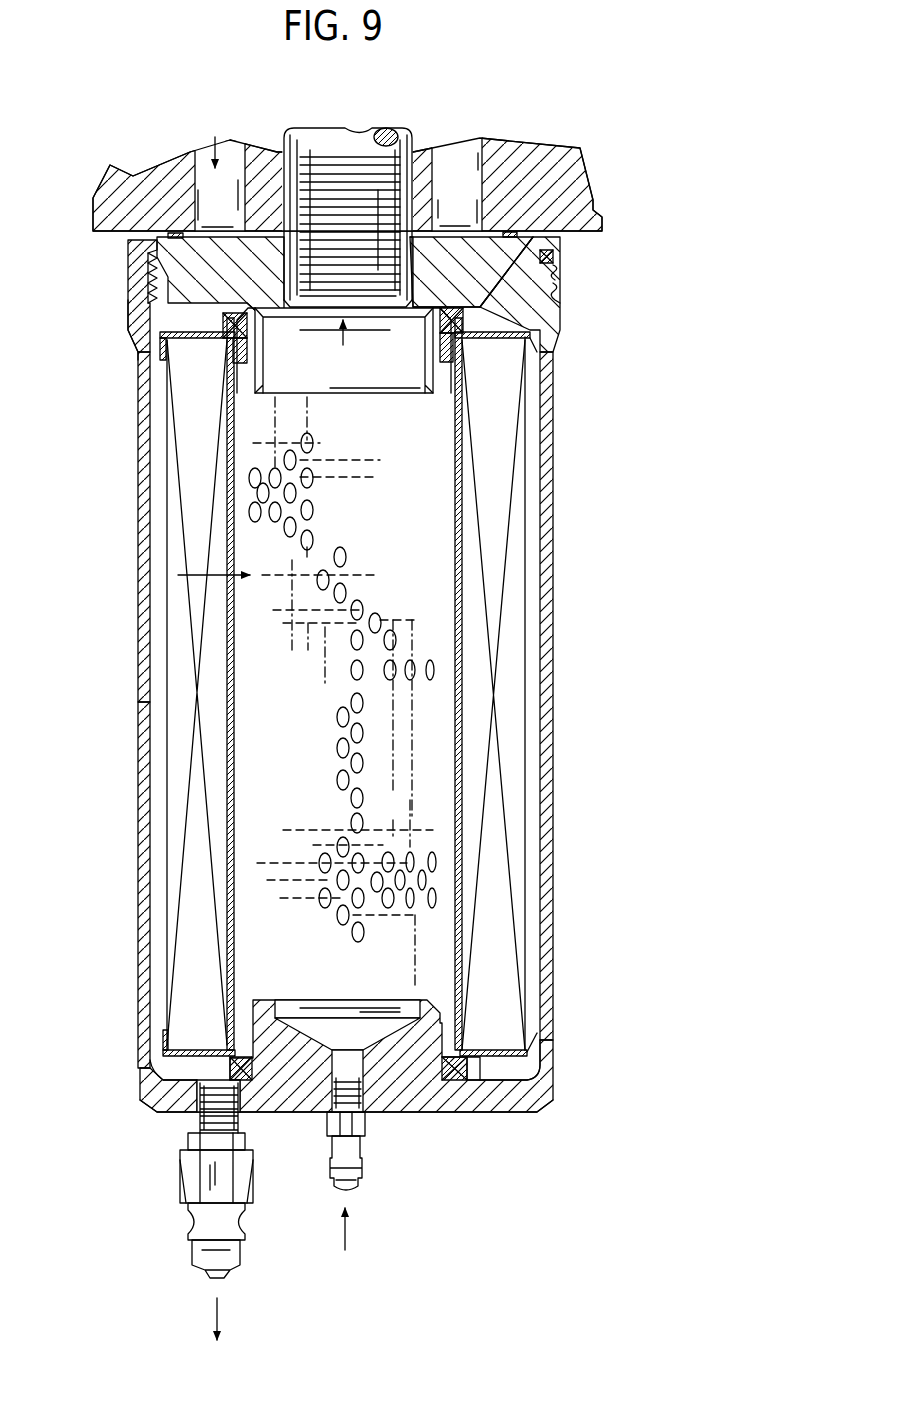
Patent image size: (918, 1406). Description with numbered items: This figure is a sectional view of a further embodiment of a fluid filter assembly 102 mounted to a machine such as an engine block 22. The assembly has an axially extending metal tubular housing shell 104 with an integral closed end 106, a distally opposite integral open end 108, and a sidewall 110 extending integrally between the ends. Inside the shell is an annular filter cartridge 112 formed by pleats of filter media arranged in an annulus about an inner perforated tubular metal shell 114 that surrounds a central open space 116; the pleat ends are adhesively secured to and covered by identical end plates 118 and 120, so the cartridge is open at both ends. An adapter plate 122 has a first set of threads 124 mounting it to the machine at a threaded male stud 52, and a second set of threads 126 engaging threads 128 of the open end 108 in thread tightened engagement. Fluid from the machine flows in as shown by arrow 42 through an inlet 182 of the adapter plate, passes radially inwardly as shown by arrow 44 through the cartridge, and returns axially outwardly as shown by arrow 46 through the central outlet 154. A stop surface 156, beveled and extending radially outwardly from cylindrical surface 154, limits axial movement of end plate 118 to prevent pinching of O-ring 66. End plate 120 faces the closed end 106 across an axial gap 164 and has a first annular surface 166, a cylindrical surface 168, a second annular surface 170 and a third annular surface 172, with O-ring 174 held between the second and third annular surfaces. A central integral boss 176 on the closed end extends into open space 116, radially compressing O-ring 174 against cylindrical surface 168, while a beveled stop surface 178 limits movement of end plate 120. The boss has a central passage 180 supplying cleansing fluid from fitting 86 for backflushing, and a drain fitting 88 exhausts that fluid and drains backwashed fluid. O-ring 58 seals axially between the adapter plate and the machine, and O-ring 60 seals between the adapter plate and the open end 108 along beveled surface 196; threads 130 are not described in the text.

The engine block 22 is at (577, 170).
The arrow 42 is at (213, 150).
The arrow 44 is at (214, 578).
The arrow 46 is at (342, 344).
The threaded male stud 52 is at (345, 146).
The first annular O-ring 58 is at (512, 230).
The second annular O-ring 60 is at (560, 255).
The third annular O-ring 66 is at (463, 320).
The fitting 86 is at (360, 1178).
The drain fitting 88 is at (240, 1250).
The fluid filter assembly 102 is at (127, 447).
The housing shell 104 is at (140, 712).
The integral closed end 106 is at (502, 1115).
The integral open end 108 is at (130, 258).
The sidewall 110 is at (547, 657).
The filter cartridge 112 is at (515, 792).
The inner perforated tubular metal shell 114 is at (452, 743).
The central open space 116 is at (432, 523).
The end plate 118 is at (483, 340).
The end plate 120 is at (493, 1045).
The adapter plate 122 is at (557, 317).
The first set of threads 124 is at (400, 260).
The second set of threads 126 is at (535, 303).
The threads 128 is at (557, 283).
The threads 130 is at (168, 320).
The central outlet 154 is at (253, 370).
The stop surface 156 is at (253, 303).
The axial gap 164 is at (520, 1065).
The first annular surface 166 is at (195, 1072).
The cylindrical surface 168 is at (195, 1085).
The second annular surface 170 is at (267, 1007).
The third annular surface 172 is at (240, 1092).
The fourth annular O-ring 174 is at (480, 1082).
The central integral boss 176 is at (397, 1102).
The stop surface 178 is at (462, 1082).
The central axially extending passage 180 is at (347, 1050).
The inlet 182 is at (168, 237).
The beveled surface 196 is at (560, 270).